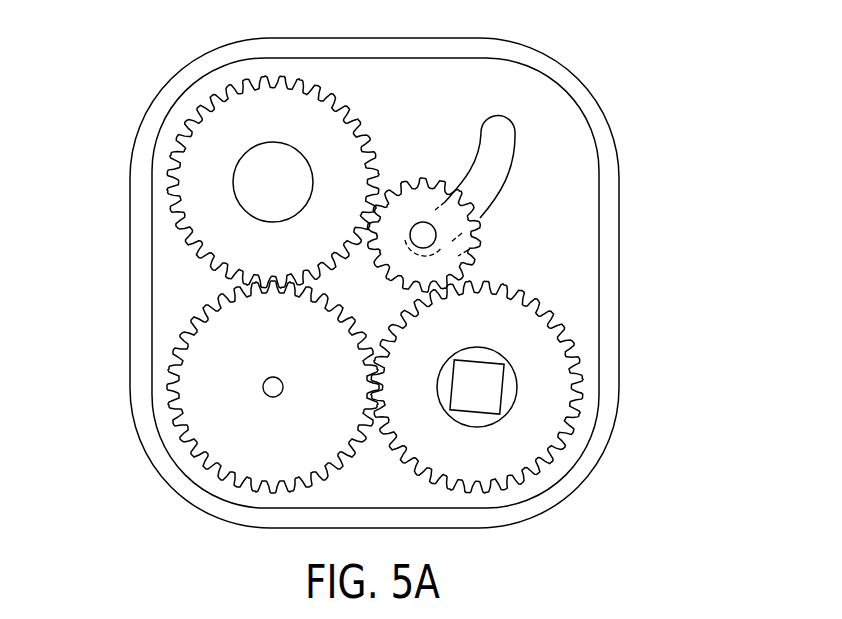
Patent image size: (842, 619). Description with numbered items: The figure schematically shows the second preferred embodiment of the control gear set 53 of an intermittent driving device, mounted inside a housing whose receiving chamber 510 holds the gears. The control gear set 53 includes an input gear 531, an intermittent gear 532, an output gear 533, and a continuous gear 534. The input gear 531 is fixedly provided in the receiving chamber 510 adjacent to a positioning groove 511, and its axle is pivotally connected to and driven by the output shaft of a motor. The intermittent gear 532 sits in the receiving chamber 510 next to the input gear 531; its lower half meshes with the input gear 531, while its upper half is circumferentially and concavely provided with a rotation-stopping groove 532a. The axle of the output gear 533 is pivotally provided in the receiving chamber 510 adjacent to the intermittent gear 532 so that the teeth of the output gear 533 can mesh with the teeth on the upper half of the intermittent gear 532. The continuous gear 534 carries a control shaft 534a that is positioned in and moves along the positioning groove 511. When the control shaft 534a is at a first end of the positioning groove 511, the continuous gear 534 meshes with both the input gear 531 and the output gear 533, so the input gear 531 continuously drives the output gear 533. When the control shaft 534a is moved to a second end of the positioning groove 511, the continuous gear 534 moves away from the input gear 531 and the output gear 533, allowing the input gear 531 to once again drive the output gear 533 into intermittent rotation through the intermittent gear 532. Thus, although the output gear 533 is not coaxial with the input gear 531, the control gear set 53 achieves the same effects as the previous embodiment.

The control gear set 53 is at (653, 50).
The receiving chamber 510 is at (140, 274).
The positioning groove 511 is at (502, 140).
The input gear 531 is at (202, 172).
The intermittent gear 532 is at (230, 448).
The rotation-stopping groove 532a is at (188, 337).
The output gear 533 is at (543, 383).
The continuous gear 534 is at (460, 253).
The control shaft 534a is at (423, 236).